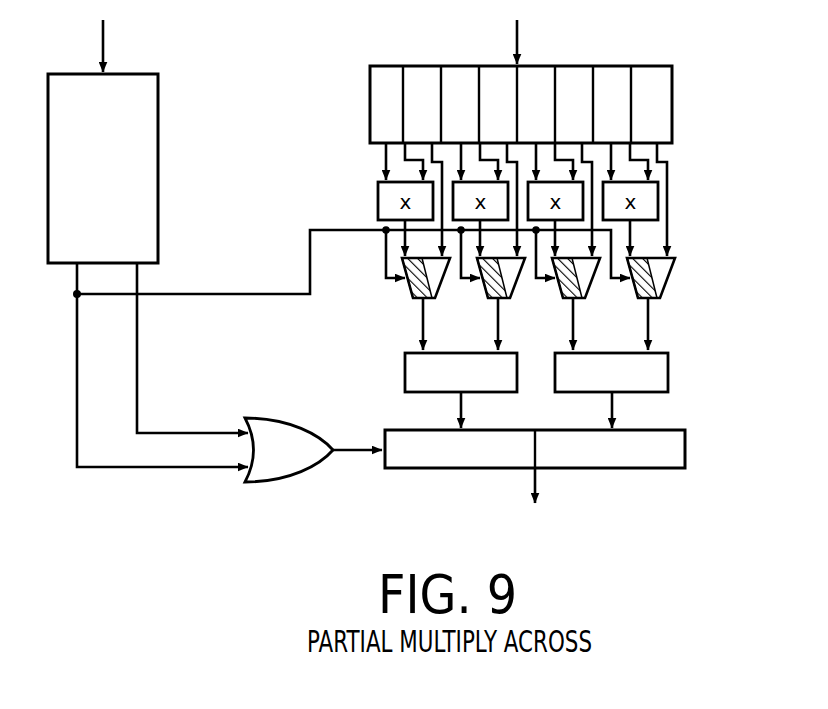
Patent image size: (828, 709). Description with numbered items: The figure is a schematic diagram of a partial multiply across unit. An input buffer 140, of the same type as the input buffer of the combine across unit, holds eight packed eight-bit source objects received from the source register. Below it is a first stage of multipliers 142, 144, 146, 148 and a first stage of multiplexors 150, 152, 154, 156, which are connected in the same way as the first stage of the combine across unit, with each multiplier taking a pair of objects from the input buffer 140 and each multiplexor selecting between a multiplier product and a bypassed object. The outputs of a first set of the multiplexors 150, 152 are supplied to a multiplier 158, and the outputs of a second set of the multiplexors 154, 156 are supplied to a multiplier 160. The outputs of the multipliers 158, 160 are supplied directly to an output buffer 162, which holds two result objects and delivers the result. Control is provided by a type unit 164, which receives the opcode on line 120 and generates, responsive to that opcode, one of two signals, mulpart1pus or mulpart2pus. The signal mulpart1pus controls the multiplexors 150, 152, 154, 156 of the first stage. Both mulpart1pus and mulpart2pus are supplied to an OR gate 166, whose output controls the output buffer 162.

The line 120 is at (106, 53).
The input buffer 140 is at (672, 105).
The multiplier 142 is at (658, 187).
The multiplier 144 is at (612, 235).
The multiplier 146 is at (455, 216).
The multiplier 148 is at (378, 190).
The multiplexor 150 is at (672, 273).
The multiplexor 152 is at (588, 297).
The multiplexor 154 is at (513, 297).
The multiplexor 156 is at (438, 297).
The multiplier 158 is at (668, 388).
The multiplier 160 is at (405, 385).
The output buffer 162 is at (685, 458).
The type unit 164 is at (158, 172).
The OR gate 166 is at (323, 467).